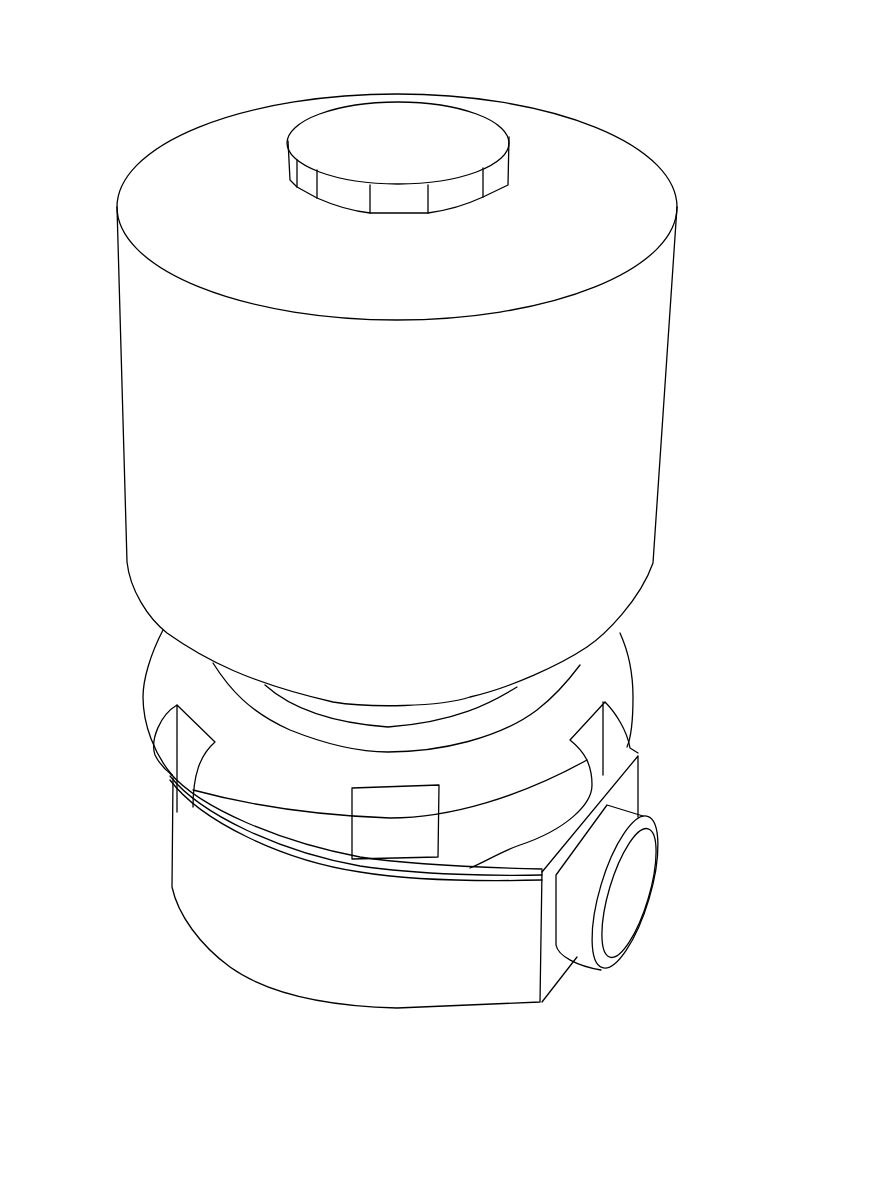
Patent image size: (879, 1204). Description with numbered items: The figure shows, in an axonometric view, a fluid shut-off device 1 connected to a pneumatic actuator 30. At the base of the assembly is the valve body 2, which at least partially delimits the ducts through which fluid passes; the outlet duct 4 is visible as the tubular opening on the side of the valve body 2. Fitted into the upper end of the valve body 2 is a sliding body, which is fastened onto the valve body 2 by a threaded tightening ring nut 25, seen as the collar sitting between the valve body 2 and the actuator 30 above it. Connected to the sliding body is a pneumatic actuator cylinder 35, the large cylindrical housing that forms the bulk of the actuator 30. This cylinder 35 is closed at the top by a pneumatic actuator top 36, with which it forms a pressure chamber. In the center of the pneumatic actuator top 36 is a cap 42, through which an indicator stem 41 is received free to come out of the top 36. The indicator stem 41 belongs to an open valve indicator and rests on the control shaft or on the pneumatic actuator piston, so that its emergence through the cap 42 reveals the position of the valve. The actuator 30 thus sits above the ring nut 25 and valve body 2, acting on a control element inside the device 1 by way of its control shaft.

The fluid shut-off device 1 is at (683, 678).
The valve body 2 is at (263, 935).
The outlet duct 4 is at (614, 900).
The threaded tightening ring nut 25 is at (248, 768).
The actuator 30 is at (705, 160).
The pneumatic actuator cylinder 35 is at (597, 458).
The pneumatic actuator top 36 is at (187, 177).
The indicator stem 41 is at (408, 141).
The cap 42 is at (488, 142).